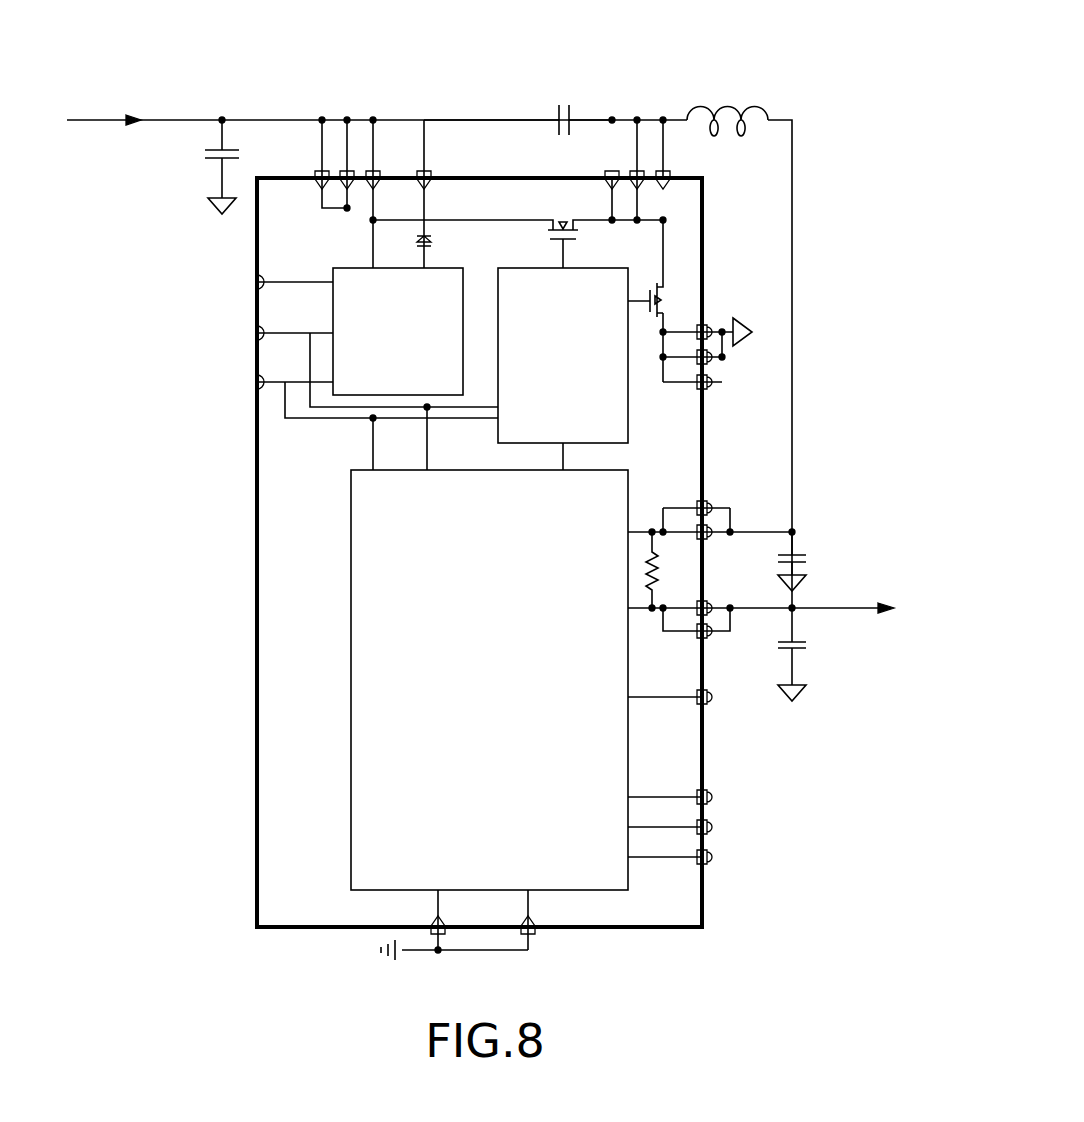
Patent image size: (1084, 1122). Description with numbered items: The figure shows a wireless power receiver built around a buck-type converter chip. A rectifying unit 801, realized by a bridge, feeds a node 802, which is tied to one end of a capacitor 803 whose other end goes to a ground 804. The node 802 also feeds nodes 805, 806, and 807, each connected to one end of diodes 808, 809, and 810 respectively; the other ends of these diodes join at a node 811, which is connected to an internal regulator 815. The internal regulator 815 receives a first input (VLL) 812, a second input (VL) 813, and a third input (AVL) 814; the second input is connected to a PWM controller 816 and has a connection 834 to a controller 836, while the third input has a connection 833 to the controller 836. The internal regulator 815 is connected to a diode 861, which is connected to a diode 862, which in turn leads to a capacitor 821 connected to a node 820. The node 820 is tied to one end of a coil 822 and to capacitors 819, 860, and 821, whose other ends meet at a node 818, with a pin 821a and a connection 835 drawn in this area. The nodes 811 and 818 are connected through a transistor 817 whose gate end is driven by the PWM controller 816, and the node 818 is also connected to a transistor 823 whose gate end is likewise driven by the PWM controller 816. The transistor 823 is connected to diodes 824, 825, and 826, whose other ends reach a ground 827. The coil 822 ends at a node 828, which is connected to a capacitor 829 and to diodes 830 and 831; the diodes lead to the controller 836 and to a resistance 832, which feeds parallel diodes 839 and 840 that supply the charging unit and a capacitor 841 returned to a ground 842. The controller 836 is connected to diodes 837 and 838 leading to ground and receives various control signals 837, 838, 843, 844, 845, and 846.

The rectifying unit 801 is at (133, 92).
The node 802 is at (222, 116).
The capacitor 803 is at (206, 152).
The ground 804 is at (218, 218).
The node 805 is at (322, 116).
The node 806 is at (348, 116).
The node 807 is at (374, 116).
The diode 808 is at (321, 177).
The diode 809 is at (349, 176).
The diode 810 is at (375, 177).
The node 811 is at (372, 220).
The first input (VLL) 812 is at (255, 286).
The second input (VL) 813 is at (255, 336).
The third input (AVL) 814 is at (255, 386).
The internal regulator 815 is at (458, 268).
The PWM controller 816 is at (585, 268).
The transistor 817 is at (548, 236).
The node 818 is at (665, 219).
The capacitor 819 is at (611, 177).
The node 820 is at (637, 116).
The capacitor 821 is at (566, 82).
The LX pin 821a is at (665, 177).
The coil 822 is at (746, 104).
The transistor 823 is at (662, 290).
The diode 824 is at (704, 326).
The diode 825 is at (718, 352).
The diode 826 is at (712, 390).
The ground 827 is at (753, 332).
The node 828 is at (795, 532).
The capacitor 829 is at (802, 555).
The diode 830 is at (704, 507).
The diode 831 is at (705, 530).
The resistance 832 is at (650, 576).
The connection 833 is at (372, 450).
The connection 834 is at (428, 450).
The control connection 835 is at (564, 458).
The controller 836 is at (350, 583).
The diode 837 is at (437, 924).
The diode 838 is at (572, 912).
The diode 839 is at (706, 606).
The diode 840 is at (710, 634).
The capacitor 841 is at (806, 646).
The ground 842 is at (806, 690).
The control signal 843 is at (709, 700).
The control signal 844 is at (712, 794).
The control signal 845 is at (712, 824).
The control signal 846 is at (712, 853).
The capacitor 860 is at (664, 116).
The diode 861 is at (416, 242).
The diode 862 is at (428, 176).